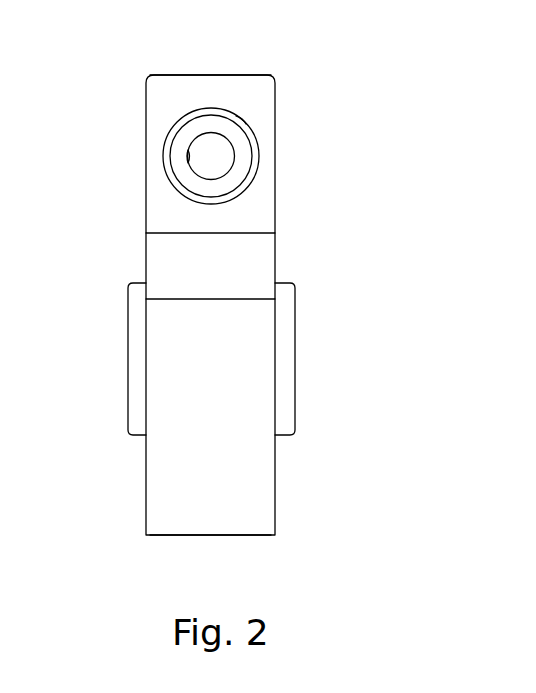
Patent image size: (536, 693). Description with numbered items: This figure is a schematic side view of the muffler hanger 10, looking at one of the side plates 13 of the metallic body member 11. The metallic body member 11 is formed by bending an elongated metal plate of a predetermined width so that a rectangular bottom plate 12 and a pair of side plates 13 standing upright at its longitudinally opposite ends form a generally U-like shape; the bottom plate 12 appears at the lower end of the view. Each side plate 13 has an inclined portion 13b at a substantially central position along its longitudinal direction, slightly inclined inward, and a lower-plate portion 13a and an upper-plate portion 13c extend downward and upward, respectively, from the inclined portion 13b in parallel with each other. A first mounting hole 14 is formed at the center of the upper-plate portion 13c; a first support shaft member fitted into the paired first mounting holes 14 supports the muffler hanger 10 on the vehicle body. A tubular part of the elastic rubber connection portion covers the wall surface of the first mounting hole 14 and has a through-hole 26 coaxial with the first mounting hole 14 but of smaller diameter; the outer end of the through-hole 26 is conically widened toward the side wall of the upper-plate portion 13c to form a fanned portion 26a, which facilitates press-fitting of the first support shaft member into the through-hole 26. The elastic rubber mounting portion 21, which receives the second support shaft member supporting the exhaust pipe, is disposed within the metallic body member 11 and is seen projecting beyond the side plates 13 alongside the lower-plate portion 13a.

The muffler hanger 10 is at (242, 58).
The metallic body member 11 is at (273, 79).
The bottom plate 12 is at (227, 535).
The side plate 13 is at (276, 158).
The lower-plate portion 13a is at (268, 483).
The inclined portion 13b is at (267, 257).
The upper-plate portion 13c is at (267, 196).
The first mounting hole 14 is at (235, 122).
The elastic rubber mounting portion 21 is at (296, 312).
The through-hole 26 is at (190, 161).
The fanned portion 26a is at (178, 130).